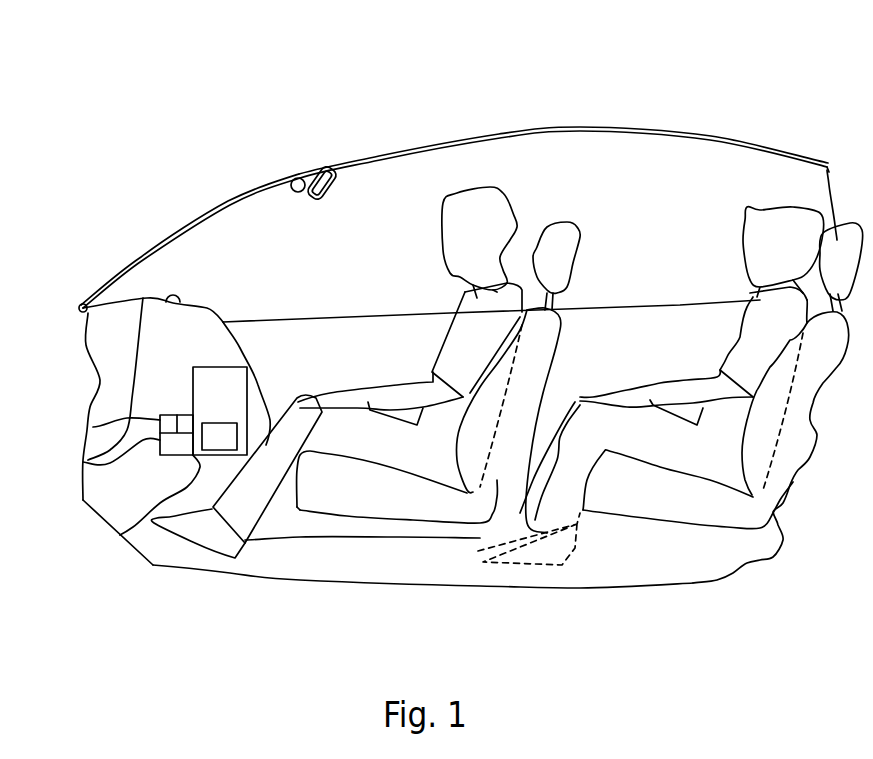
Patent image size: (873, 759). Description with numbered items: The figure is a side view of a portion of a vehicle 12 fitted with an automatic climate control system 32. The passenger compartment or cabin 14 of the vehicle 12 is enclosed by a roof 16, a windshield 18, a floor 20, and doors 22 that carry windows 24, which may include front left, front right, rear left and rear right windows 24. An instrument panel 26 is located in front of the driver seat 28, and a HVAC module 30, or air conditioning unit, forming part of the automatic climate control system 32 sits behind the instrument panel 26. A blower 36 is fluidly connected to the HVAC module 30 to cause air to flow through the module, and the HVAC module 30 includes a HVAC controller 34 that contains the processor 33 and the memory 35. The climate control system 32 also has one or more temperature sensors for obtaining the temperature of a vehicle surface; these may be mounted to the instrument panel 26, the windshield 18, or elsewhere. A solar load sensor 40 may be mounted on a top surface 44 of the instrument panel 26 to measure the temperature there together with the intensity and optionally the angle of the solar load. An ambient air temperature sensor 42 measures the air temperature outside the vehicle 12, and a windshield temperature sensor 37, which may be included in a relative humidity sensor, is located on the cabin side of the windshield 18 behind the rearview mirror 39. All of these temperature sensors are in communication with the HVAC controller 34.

The vehicle 12 is at (204, 108).
The passenger compartment or cabin 14 is at (620, 170).
The roof 16 is at (580, 128).
The windshield 18 is at (230, 203).
The floor 20 is at (550, 587).
The doors 22 is at (627, 307).
The windows 24 is at (424, 194).
The instrument panel 26 is at (208, 302).
The driver seat 28 is at (350, 517).
The HVAC module 30 is at (117, 537).
The automatic climate control system 32 is at (251, 228).
The processor 33 is at (93, 427).
The HVAC controller 34 is at (83, 462).
The memory 35 is at (187, 413).
The blower 36 is at (193, 440).
The windshield temperature sensor 37 is at (292, 165).
The rearview mirror 39 is at (343, 160).
The solar load sensor 40 is at (173, 295).
The ambient air temperature sensor 42 is at (80, 303).
The top surface 44 is at (137, 272).